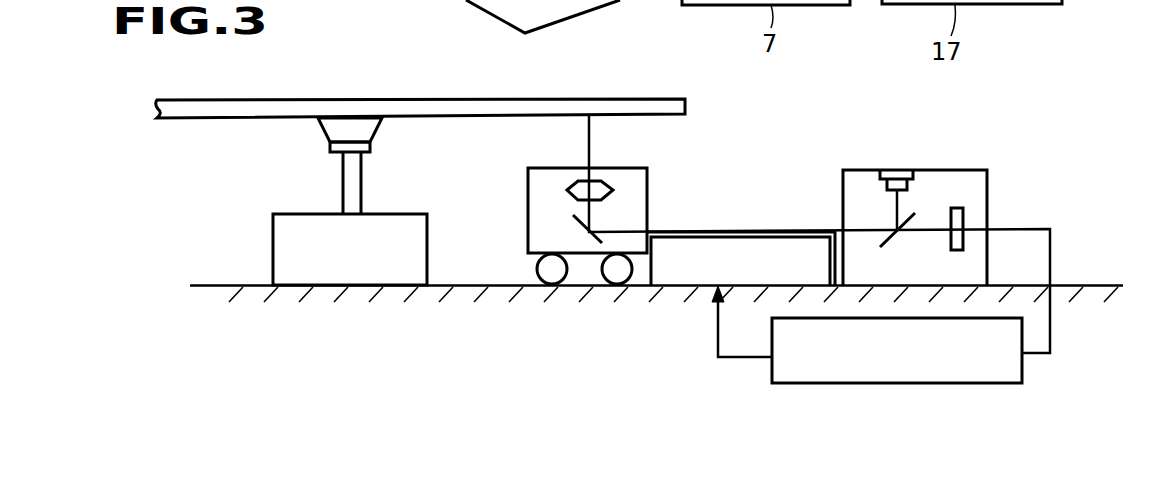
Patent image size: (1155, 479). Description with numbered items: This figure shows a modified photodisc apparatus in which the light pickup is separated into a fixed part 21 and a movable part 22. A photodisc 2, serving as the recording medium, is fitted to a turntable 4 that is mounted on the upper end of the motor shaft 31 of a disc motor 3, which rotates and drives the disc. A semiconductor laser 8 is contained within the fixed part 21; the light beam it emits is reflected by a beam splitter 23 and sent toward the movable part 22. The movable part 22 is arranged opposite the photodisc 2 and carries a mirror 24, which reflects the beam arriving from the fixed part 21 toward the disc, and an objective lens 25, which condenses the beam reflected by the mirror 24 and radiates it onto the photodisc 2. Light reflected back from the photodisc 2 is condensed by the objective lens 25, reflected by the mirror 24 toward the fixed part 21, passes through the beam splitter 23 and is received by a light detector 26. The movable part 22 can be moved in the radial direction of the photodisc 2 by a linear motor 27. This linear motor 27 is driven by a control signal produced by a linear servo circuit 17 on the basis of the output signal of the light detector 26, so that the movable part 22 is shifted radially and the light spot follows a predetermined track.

The photodisc 2 is at (257, 100).
The turntable 4 is at (320, 136).
The motor shaft 31 is at (343, 189).
The disc motor 3 is at (273, 262).
The movable part 22 is at (514, 217).
The objective lens 25 is at (567, 190).
The mirror 24 is at (580, 230).
The linear motor 27 is at (646, 288).
The fixed part 21 is at (965, 171).
The semiconductor laser 8 is at (899, 178).
The beam splitter 23 is at (881, 246).
The light detector 26 is at (967, 219).
The linear servo circuit 17 is at (1023, 375).